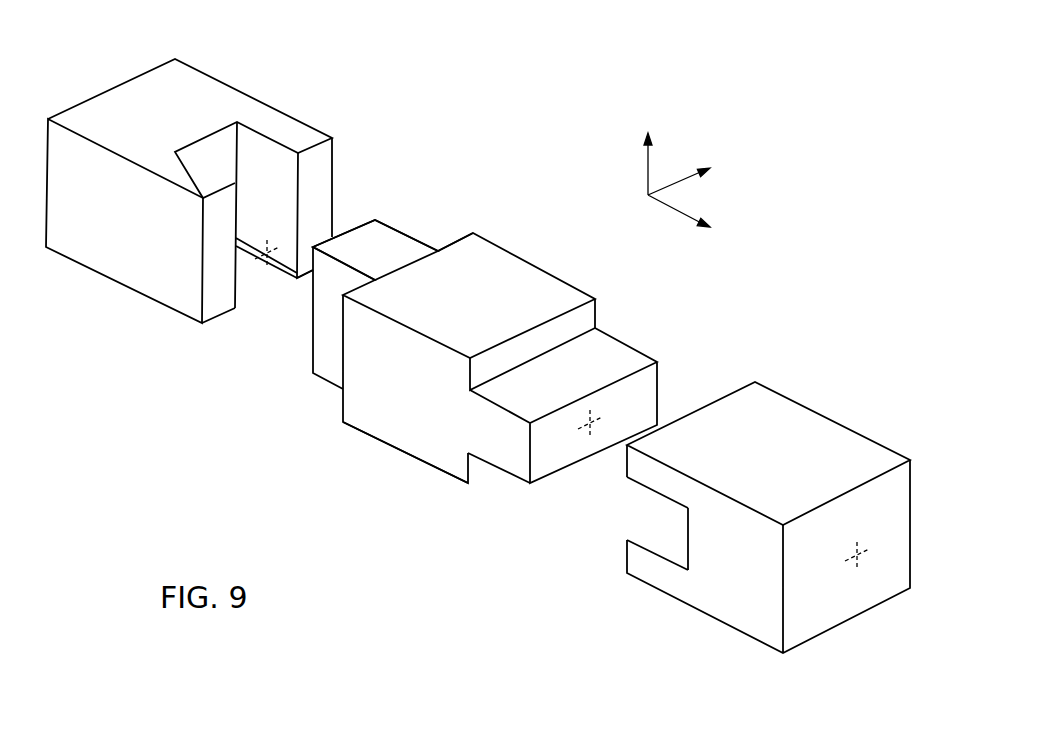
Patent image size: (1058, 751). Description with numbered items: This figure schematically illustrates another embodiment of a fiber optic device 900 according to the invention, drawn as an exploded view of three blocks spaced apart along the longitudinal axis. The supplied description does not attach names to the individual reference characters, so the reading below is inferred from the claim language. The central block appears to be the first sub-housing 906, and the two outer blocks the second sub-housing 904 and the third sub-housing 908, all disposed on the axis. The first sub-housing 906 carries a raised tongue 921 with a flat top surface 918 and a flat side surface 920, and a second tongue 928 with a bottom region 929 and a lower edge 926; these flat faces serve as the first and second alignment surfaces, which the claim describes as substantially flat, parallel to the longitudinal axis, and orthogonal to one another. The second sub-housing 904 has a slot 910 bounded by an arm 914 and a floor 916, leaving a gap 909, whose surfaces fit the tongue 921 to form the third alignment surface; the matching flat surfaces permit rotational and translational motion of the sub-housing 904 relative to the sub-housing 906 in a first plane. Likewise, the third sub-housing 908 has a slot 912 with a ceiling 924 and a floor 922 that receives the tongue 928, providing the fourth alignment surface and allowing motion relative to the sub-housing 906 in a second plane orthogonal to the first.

The alignment assembly 900 is at (189, 494).
The first block 904 is at (215, 207).
The center block 906 is at (463, 331).
The second block 908 is at (706, 481).
The gap 909 is at (307, 277).
The slot of first block 910 is at (257, 290).
The slot of second block 912 is at (638, 513).
The arm of first block 914 is at (292, 157).
The slot floor of first block 916 is at (243, 290).
The top surface of tongue 918 is at (402, 228).
The side surface of tongue 920 is at (330, 370).
The first tongue 921 is at (372, 232).
The slot floor of second block 922 is at (636, 535).
The slot ceiling of second block 924 is at (648, 489).
The bottom edge of center block 926 is at (513, 482).
The second tongue 928 is at (615, 348).
The bottom notch of center block 929 is at (492, 445).